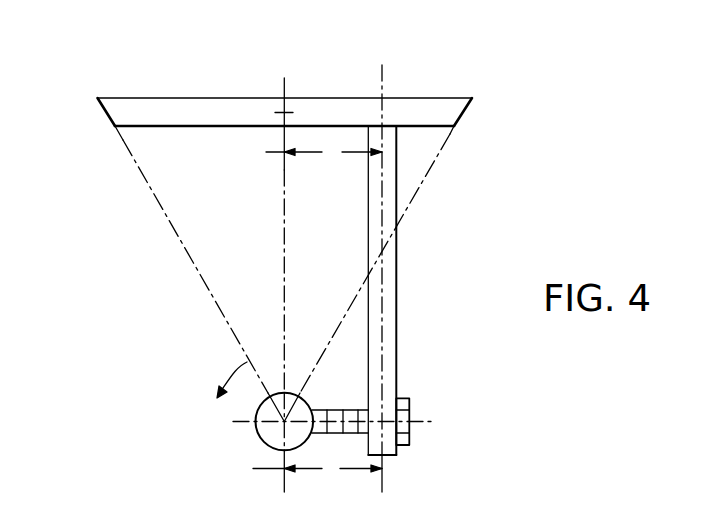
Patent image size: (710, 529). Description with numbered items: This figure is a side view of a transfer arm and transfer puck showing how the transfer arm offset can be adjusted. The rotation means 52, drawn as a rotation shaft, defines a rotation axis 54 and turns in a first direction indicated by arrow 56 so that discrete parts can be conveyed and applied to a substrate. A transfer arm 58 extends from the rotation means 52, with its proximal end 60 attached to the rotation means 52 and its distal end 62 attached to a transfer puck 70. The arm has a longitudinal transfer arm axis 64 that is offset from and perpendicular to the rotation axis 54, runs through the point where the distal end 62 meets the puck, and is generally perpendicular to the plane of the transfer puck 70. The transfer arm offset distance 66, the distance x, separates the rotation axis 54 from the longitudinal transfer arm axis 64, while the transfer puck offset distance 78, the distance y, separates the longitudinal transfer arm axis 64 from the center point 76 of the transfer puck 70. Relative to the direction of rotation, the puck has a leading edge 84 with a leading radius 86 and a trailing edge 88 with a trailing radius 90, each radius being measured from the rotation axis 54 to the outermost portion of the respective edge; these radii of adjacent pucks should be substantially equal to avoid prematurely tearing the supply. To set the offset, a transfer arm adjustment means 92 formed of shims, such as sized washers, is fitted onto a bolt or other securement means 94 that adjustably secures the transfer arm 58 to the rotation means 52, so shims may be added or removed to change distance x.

The rotation means 52 is at (257, 408).
The rotation axis 54 is at (280, 425).
The arrow 56 is at (228, 374).
The transfer arm 58 is at (397, 292).
The proximal end 60 is at (397, 451).
The distal end 62 is at (398, 128).
The longitudinal transfer arm axis 64 is at (383, 482).
The transfer arm offset distance 66 is at (267, 472).
The transfer puck 70 is at (427, 108).
The center point 76 is at (278, 111).
The transfer puck offset distance 78 is at (270, 153).
The leading edge 84 is at (102, 111).
The leading radius 86 is at (175, 232).
The trailing edge 88 is at (463, 112).
The trailing radius 90 is at (355, 297).
The transfer arm adjustment means 92 is at (338, 411).
The securement means 94 is at (404, 402).